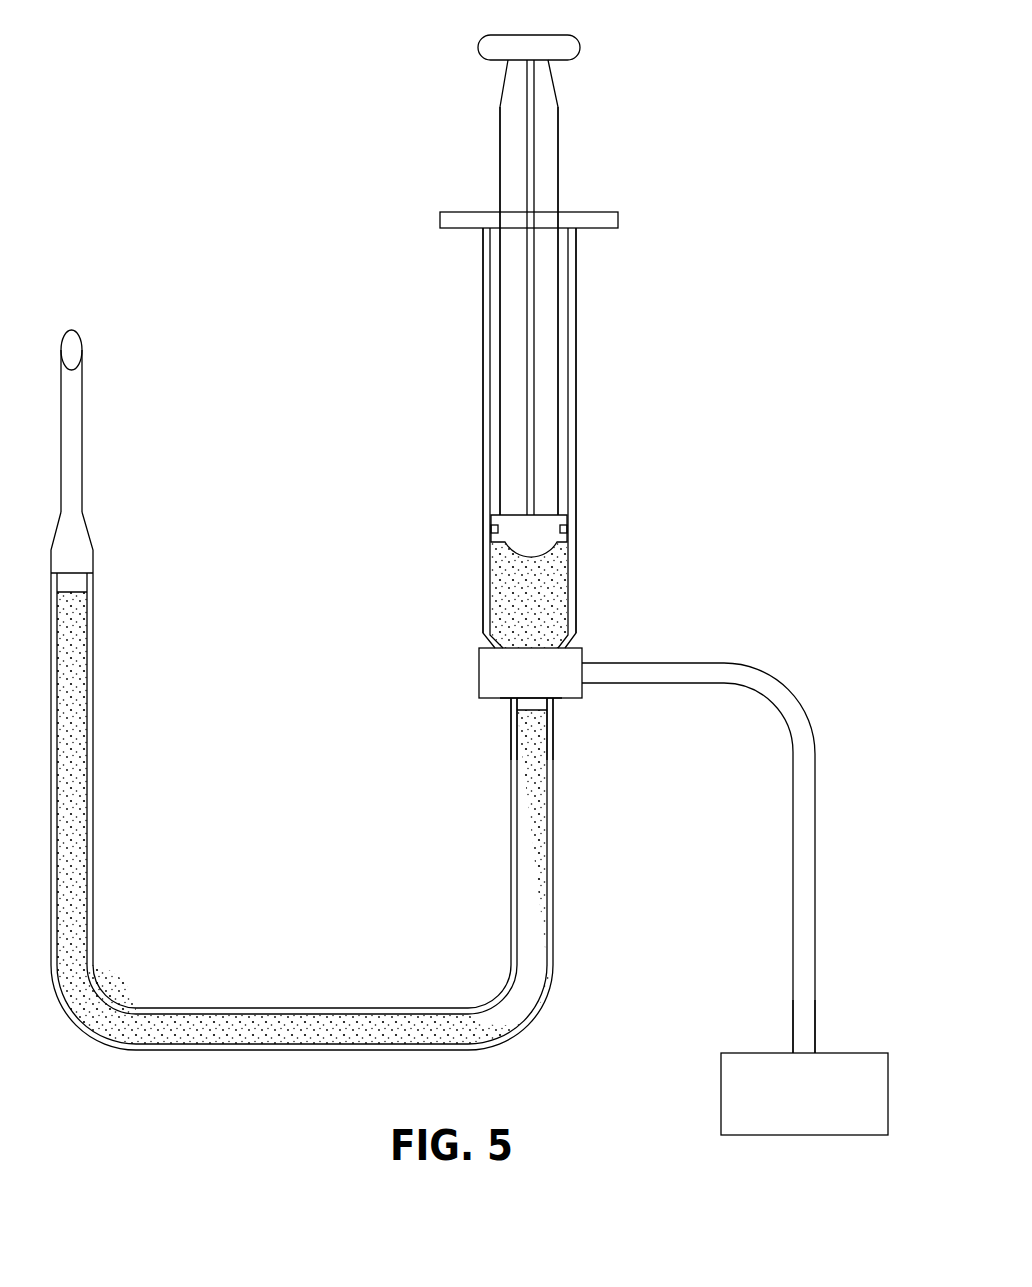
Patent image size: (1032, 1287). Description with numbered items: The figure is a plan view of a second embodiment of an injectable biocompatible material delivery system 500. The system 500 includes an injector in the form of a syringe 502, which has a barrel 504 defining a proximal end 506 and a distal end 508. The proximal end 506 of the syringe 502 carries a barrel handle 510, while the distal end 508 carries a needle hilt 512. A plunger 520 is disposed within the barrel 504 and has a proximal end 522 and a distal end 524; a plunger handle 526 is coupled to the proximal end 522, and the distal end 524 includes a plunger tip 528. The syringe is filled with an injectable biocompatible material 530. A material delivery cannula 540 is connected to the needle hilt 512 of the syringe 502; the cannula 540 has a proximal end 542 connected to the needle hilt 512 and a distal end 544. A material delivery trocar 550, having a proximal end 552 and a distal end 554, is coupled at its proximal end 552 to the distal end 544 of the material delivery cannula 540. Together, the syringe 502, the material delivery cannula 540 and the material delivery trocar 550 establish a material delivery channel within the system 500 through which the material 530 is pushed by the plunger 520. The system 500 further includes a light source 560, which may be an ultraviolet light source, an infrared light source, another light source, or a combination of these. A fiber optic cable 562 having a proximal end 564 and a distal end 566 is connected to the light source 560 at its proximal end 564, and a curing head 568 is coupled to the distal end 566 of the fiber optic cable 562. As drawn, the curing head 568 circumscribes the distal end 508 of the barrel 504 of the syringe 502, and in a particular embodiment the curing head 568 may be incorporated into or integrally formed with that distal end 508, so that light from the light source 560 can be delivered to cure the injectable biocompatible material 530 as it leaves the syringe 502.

The injectable biocompatible material delivery system 500 is at (469, 569).
The syringe 502 is at (557, 326).
The barrel 504 is at (610, 430).
The proximal end of the barrel 506 is at (443, 438).
The distal end of the barrel 508 is at (614, 663).
The barrel handle 510 is at (467, 229).
The needle hilt 512 is at (460, 729).
The plunger 520 is at (448, 311).
The proximal end of the plunger 522 is at (443, 284).
The distal end of the plunger 524 is at (626, 287).
The plunger handle 526 is at (604, 32).
The plunger tip 528 is at (460, 552).
The injectable biocompatible material 530 is at (603, 595).
The material delivery cannula 540 is at (302, 677).
The proximal end of the material delivery cannula 542 is at (425, 877).
The distal end of the material delivery cannula 544 is at (179, 805).
The material delivery trocar 550 is at (158, 431).
The proximal end of the material delivery trocar 552 is at (153, 541).
The distal end of the material delivery trocar 554 is at (158, 337).
The light source 560 is at (732, 1089).
The fiber optic cable 562 is at (716, 902).
The proximal end of the fiber optic cable 564 is at (720, 1021).
The distal end of the fiber optic cable 566 is at (698, 839).
The curing head 568 is at (610, 707).